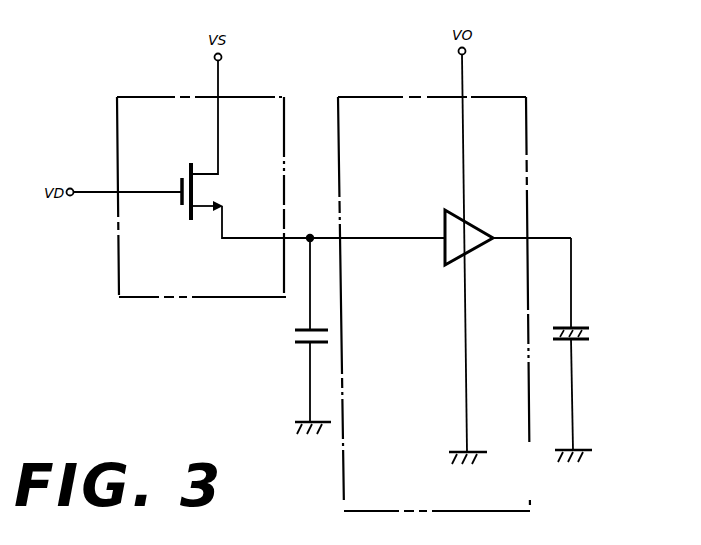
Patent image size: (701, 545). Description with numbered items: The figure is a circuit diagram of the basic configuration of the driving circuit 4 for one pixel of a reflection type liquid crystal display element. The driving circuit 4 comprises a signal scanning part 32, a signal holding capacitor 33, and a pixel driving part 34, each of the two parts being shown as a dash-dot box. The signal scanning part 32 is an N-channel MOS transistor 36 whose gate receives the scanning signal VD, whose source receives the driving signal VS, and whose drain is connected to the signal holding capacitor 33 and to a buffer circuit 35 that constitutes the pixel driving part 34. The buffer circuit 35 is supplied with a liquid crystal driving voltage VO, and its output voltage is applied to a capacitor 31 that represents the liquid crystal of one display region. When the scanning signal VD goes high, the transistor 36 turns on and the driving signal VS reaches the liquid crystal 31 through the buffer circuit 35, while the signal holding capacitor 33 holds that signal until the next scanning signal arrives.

The driving circuit 4 is at (181, 371).
The capacitor 31 is at (580, 327).
The signal scanning part 32 is at (165, 300).
The signal holding capacitor 33 is at (306, 343).
The pixel driving part 34 is at (527, 155).
The buffer circuit 35 is at (445, 253).
The N-channel MOS transistor 36 is at (189, 168).